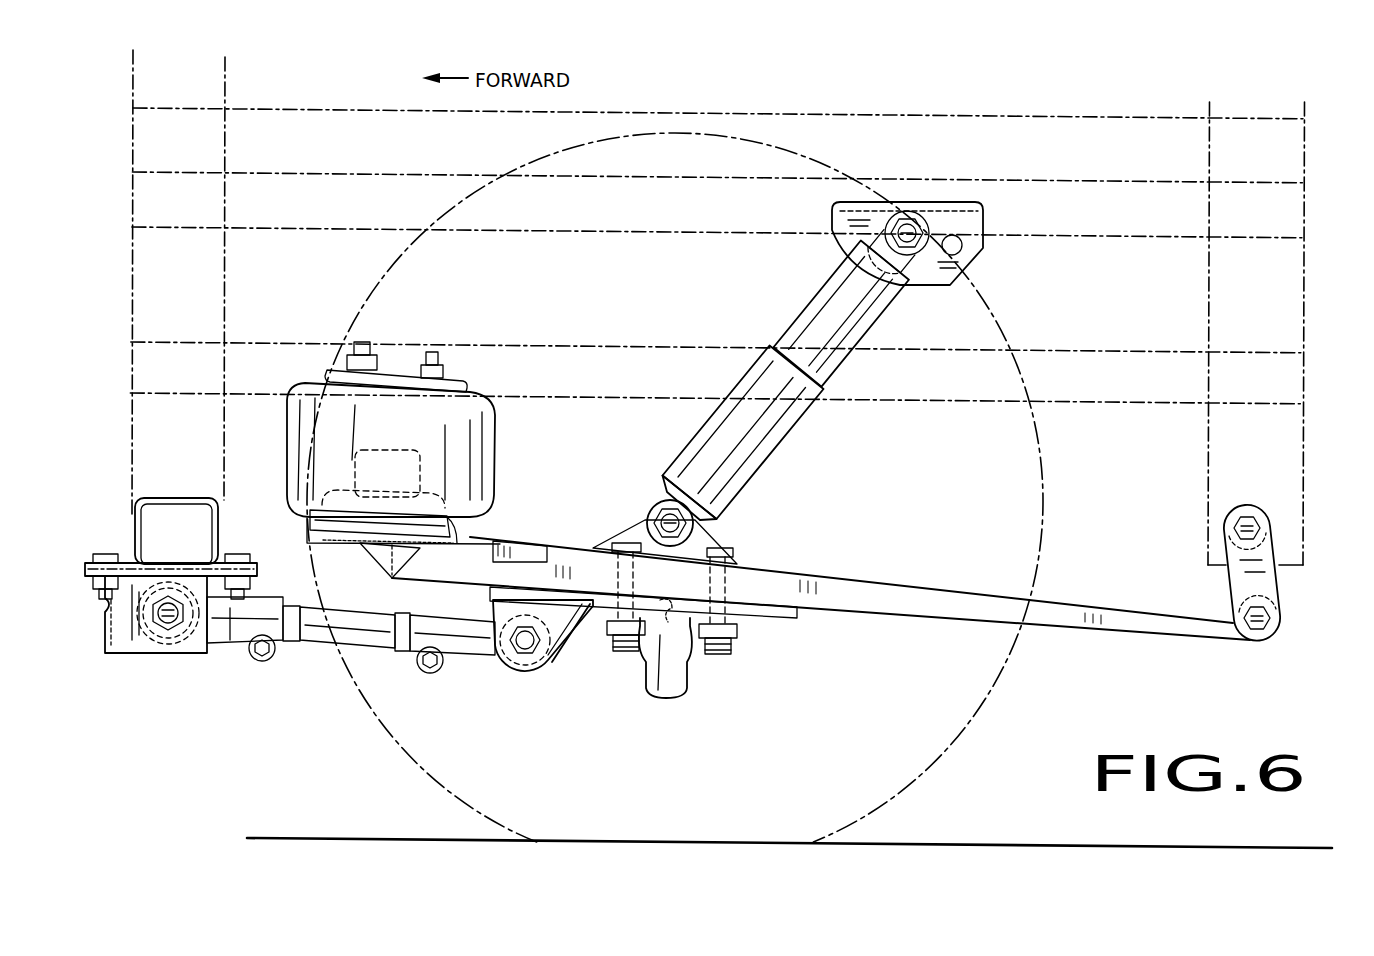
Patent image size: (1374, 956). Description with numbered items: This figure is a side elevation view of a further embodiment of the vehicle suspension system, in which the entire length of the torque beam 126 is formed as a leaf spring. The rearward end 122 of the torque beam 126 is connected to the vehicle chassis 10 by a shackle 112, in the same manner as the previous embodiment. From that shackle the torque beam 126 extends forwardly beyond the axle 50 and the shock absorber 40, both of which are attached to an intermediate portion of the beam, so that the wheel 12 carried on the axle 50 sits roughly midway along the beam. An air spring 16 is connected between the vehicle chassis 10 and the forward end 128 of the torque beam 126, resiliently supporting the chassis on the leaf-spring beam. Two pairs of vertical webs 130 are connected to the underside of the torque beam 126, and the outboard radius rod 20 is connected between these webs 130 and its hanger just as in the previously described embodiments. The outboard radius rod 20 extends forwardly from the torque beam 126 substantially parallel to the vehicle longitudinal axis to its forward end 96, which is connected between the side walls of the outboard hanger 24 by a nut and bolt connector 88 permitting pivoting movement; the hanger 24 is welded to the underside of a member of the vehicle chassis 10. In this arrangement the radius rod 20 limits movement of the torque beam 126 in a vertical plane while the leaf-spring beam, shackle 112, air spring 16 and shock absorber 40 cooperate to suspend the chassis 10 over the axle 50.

The vehicle chassis 10 is at (1030, 205).
The wheel 12 is at (456, 206).
The air spring 16 is at (468, 424).
The outboard radius rod 20 is at (365, 655).
The outboard hanger 24 is at (120, 648).
The shock absorber 40 is at (755, 436).
The axle 50 is at (690, 677).
The axle bracket 88 is at (490, 645).
The forward end of outboard radius rod 96 is at (225, 632).
The shackle 112 is at (1267, 580).
The rearward end of torque beam 122 is at (1270, 648).
The torque beam 126 is at (855, 560).
The forward end of torque beam 128 is at (360, 585).
The vertical webs 130 is at (560, 613).